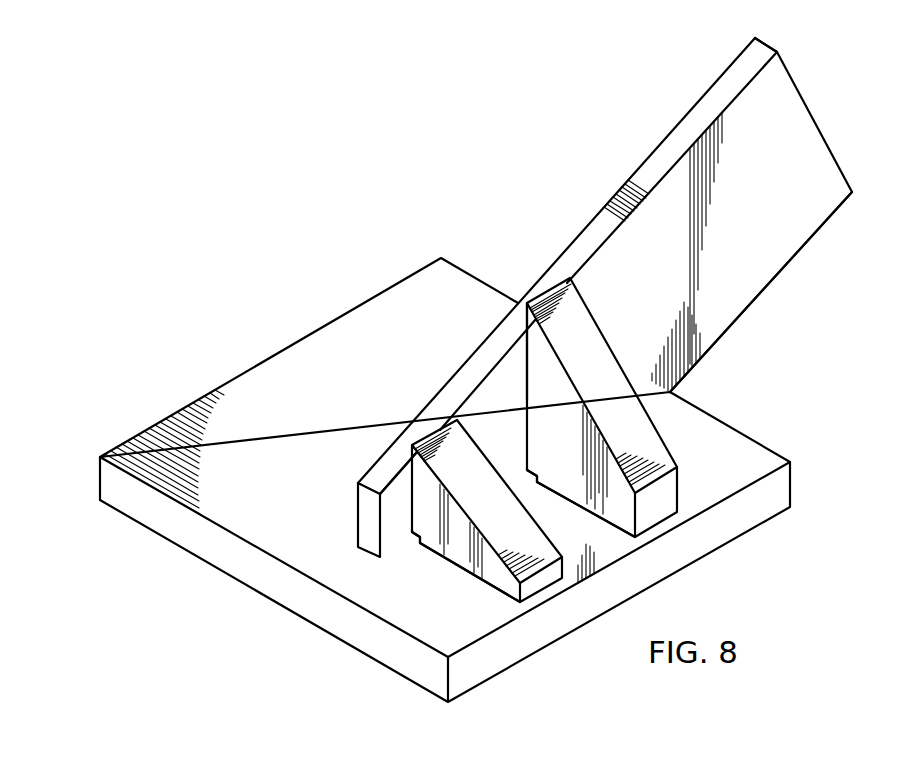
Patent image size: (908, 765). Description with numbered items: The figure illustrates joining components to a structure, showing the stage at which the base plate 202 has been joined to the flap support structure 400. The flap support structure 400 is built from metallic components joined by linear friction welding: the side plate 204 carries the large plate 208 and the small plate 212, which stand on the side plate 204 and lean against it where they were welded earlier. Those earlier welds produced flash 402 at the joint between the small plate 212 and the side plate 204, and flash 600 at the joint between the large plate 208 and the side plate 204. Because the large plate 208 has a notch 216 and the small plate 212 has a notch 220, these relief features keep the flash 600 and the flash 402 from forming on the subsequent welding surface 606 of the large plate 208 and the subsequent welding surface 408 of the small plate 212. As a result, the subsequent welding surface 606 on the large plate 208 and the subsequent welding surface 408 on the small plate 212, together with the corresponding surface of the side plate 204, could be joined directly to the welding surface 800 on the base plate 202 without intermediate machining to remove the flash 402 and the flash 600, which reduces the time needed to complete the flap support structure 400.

The base plate 202 is at (732, 426).
The side plate 204 is at (818, 122).
The large plate 208 is at (612, 354).
The small plate 212 is at (500, 468).
The notch 216 is at (533, 486).
The notch 220 is at (415, 543).
The flap support structure 400 is at (636, 92).
The flash 402 is at (410, 487).
The subsequent welding surface 408 is at (487, 584).
The flash 600 is at (525, 358).
The subsequent welding surface 606 is at (622, 532).
The welding surface 800 is at (663, 396).